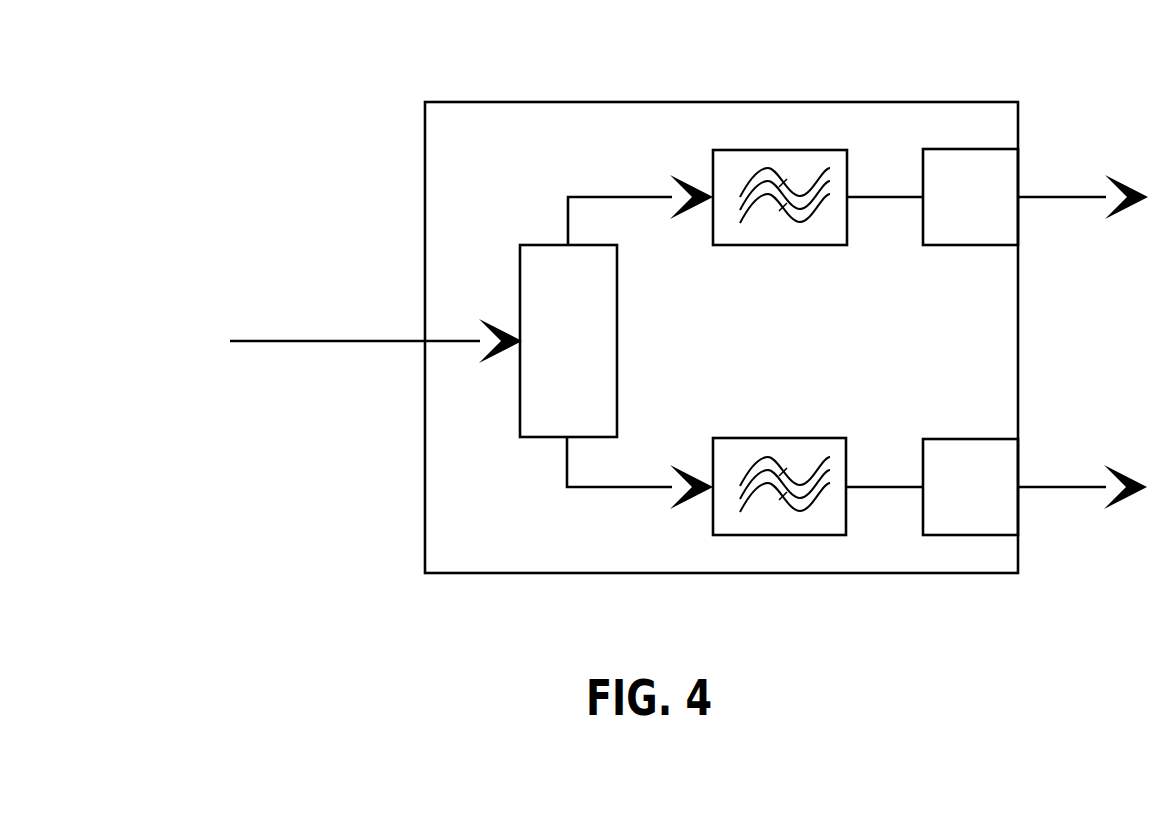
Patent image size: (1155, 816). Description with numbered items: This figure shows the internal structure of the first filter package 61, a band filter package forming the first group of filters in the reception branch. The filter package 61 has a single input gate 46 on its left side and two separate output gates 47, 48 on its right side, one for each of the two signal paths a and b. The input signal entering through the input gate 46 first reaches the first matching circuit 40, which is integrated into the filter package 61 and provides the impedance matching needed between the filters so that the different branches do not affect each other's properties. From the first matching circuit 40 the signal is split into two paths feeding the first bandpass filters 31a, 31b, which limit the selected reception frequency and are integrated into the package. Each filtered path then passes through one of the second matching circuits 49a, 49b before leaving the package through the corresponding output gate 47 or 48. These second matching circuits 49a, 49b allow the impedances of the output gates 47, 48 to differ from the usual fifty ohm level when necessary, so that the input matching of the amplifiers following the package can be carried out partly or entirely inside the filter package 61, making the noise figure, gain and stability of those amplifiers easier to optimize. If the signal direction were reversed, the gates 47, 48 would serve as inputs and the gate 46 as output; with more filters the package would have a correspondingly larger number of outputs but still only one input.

The first filter package 61 is at (678, 101).
The first matching circuit 40 is at (616, 342).
The input gate 46 is at (425, 341).
The first bandpass filter 31a is at (757, 245).
The second bandpass filter 31b is at (755, 438).
The second matching circuit 49a is at (970, 197).
The second matching circuit 49b is at (970, 487).
The output gate 47 is at (1022, 194).
The output gate 48 is at (1022, 484).